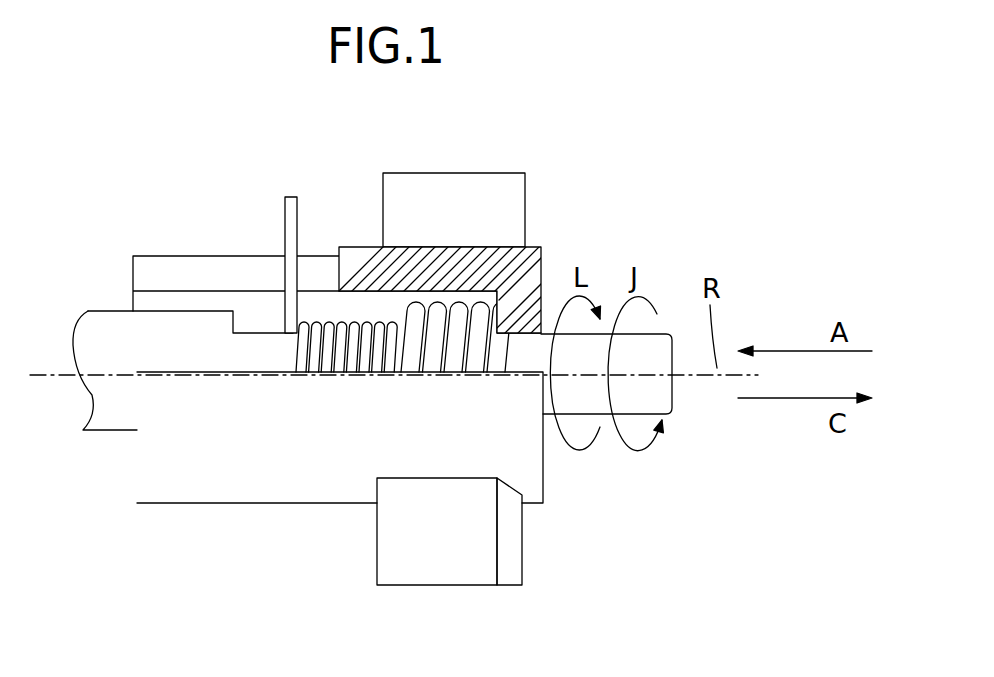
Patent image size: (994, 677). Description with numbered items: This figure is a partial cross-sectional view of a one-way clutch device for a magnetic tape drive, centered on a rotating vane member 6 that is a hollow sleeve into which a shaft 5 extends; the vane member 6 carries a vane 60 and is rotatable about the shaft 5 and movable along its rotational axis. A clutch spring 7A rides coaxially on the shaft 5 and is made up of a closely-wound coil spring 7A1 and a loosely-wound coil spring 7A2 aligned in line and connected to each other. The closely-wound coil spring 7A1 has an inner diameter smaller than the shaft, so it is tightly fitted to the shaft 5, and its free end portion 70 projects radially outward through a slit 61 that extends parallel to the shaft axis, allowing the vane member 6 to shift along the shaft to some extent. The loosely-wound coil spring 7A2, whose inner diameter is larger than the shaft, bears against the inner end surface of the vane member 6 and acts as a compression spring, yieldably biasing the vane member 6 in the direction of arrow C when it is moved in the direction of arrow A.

The shaft 5 is at (663, 394).
The rotating vane member 6 is at (182, 480).
The vane 60 is at (468, 560).
The slit 61 is at (172, 263).
The free end portion 70 is at (282, 225).
The clutch spring 7A is at (401, 337).
The closely-wound coil spring 7A1 is at (325, 360).
The loosely-wound coil spring 7A2 is at (462, 307).